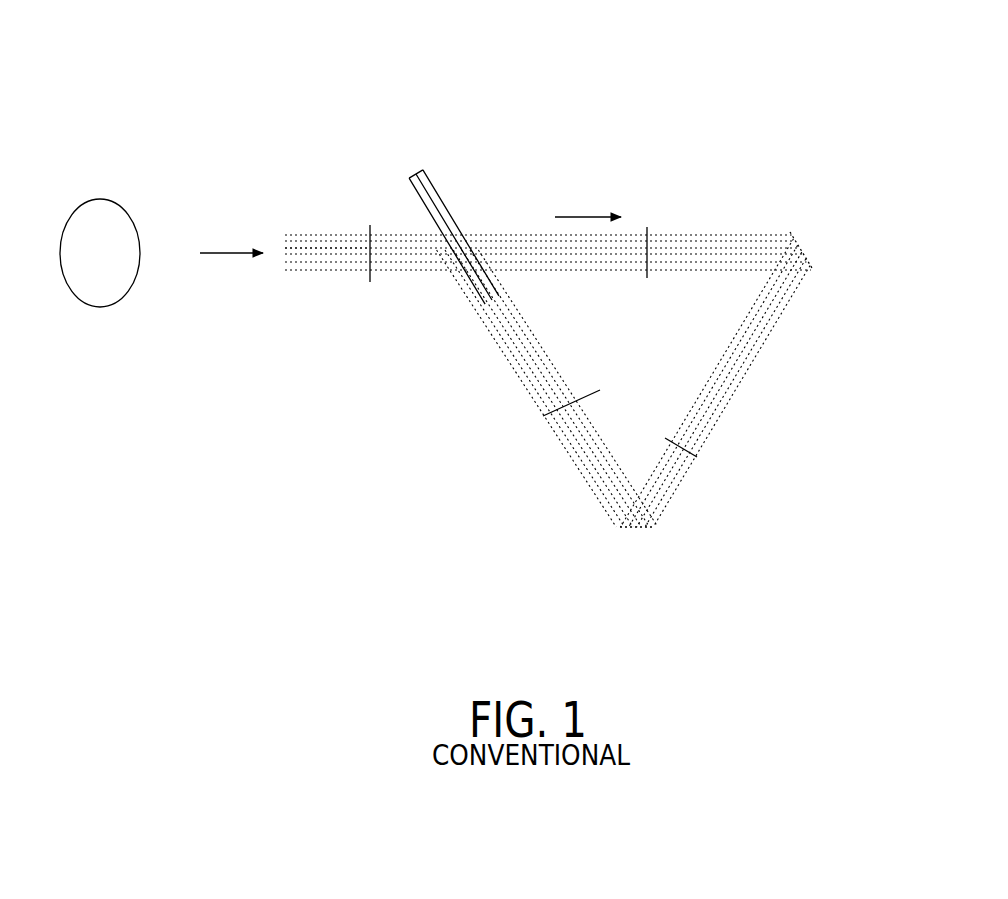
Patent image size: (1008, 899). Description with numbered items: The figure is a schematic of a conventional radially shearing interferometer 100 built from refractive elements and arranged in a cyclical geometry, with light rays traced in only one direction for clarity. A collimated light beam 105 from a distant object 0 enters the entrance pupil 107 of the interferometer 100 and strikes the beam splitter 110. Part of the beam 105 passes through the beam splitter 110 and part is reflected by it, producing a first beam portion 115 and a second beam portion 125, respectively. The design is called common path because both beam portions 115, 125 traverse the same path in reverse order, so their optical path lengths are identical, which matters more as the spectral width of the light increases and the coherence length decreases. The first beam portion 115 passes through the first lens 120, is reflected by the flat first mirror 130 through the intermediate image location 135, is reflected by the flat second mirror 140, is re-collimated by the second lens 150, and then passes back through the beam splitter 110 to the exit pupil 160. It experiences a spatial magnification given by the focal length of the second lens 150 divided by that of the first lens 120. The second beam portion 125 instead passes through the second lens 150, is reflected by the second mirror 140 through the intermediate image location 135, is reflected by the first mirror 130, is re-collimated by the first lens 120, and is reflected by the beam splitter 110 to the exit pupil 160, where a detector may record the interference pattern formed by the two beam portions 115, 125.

The radially shearing interferometer 100 is at (262, 67).
The distant object 0 is at (100, 199).
The collimated light beam 105 is at (215, 253).
The entrance pupil 107 is at (365, 266).
The beam splitter 110 is at (425, 232).
The exit pupil 160 is at (413, 170).
The first beam portion 115 is at (585, 215).
The first lens 120 is at (657, 222).
The first mirror 130 is at (800, 252).
The intermediate image location 135 is at (700, 457).
The second mirror 140 is at (640, 527).
The second beam portion 125 is at (492, 385).
The second lens 150 is at (596, 392).